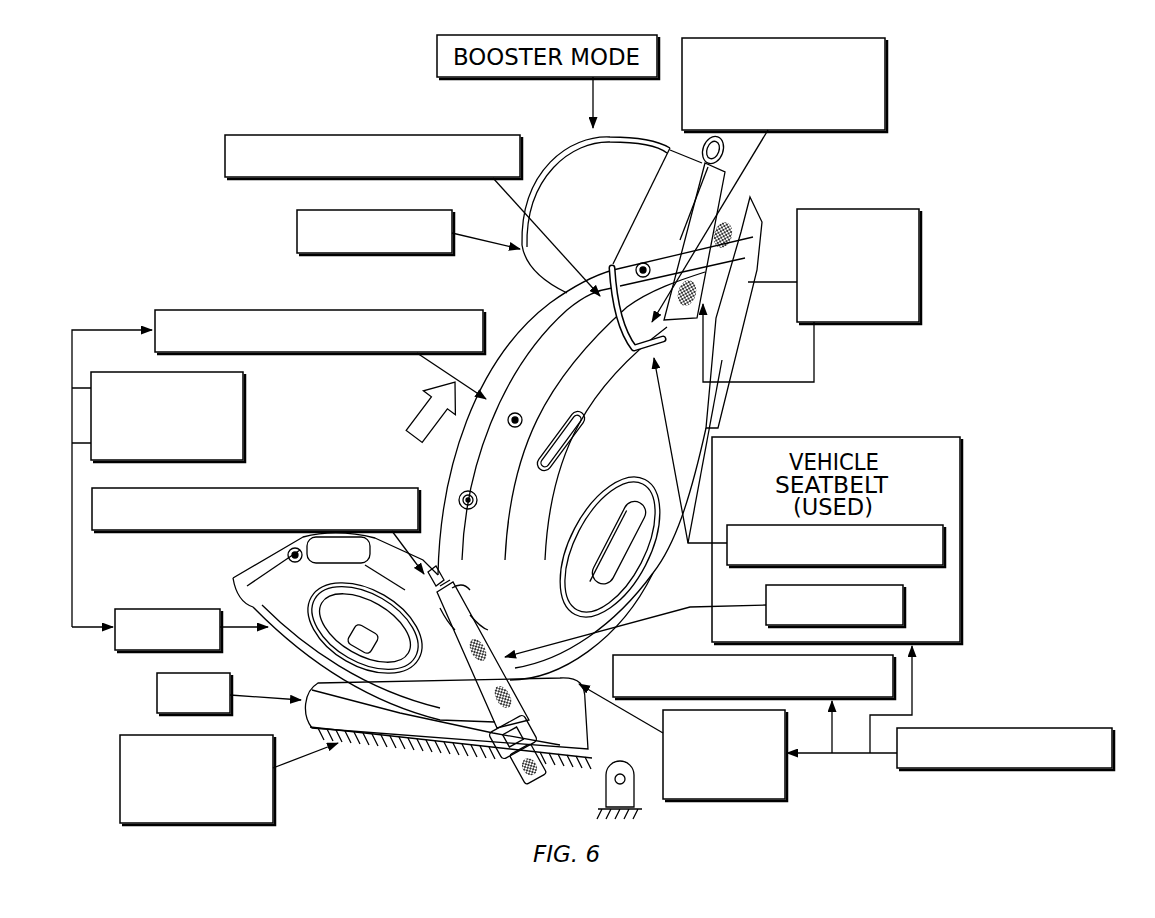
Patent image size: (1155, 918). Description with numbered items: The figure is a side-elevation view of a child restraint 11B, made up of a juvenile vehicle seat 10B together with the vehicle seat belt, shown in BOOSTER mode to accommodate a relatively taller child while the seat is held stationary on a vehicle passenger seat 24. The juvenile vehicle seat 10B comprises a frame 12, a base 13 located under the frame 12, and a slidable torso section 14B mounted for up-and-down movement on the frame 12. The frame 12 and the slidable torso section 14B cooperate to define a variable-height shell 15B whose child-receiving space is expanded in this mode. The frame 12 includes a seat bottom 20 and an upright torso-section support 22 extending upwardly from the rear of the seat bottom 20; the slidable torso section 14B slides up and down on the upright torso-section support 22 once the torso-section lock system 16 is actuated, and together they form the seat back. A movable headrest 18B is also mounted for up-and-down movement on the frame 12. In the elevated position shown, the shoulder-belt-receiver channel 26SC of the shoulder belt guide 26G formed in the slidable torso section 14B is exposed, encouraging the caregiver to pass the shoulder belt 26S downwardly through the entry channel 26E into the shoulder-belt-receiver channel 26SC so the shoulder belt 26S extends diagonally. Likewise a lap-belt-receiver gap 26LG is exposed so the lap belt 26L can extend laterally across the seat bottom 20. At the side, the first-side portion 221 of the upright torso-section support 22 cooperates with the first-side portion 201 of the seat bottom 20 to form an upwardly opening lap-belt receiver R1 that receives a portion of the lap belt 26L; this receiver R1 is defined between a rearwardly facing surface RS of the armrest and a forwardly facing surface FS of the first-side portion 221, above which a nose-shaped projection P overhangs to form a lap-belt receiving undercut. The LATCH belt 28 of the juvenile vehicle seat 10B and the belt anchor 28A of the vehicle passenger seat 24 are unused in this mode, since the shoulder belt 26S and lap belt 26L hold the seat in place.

The shoulder belt guide 26G is at (300, 134).
The movable headrest 18B is at (297, 228).
The slidable torso section 14B is at (218, 310).
The variable-height shell 15B is at (243, 419).
The lap-belt-receiver gap 26LG is at (287, 488).
The frame 12 is at (163, 609).
The seat bottom 20 is at (286, 651).
The first-side portion of seat bottom 201 is at (398, 655).
The base 13 is at (157, 690).
The vehicle passenger seat 24 is at (120, 773).
The first upwardly opening lap-belt receiver R1 is at (433, 565).
The nose-shaped projection P is at (445, 578).
The forwardly facing surface FS is at (455, 591).
The rearwardly facing surface RS is at (447, 612).
The first-side portion of upright torso-section support 221 is at (478, 622).
The entry channel 26E is at (606, 262).
The shoulder belt 26S is at (747, 220).
The shoulder-belt-receiver channel 26SC is at (885, 80).
The torso-section lock system 16 is at (919, 283).
The upright torso-section support 22 is at (715, 418).
The lap belt 26L is at (903, 612).
The LATCH belt 28 is at (653, 657).
The belt anchor 28A is at (635, 797).
The juvenile vehicle seat 10B is at (785, 782).
The child restraint 11B is at (1002, 728).